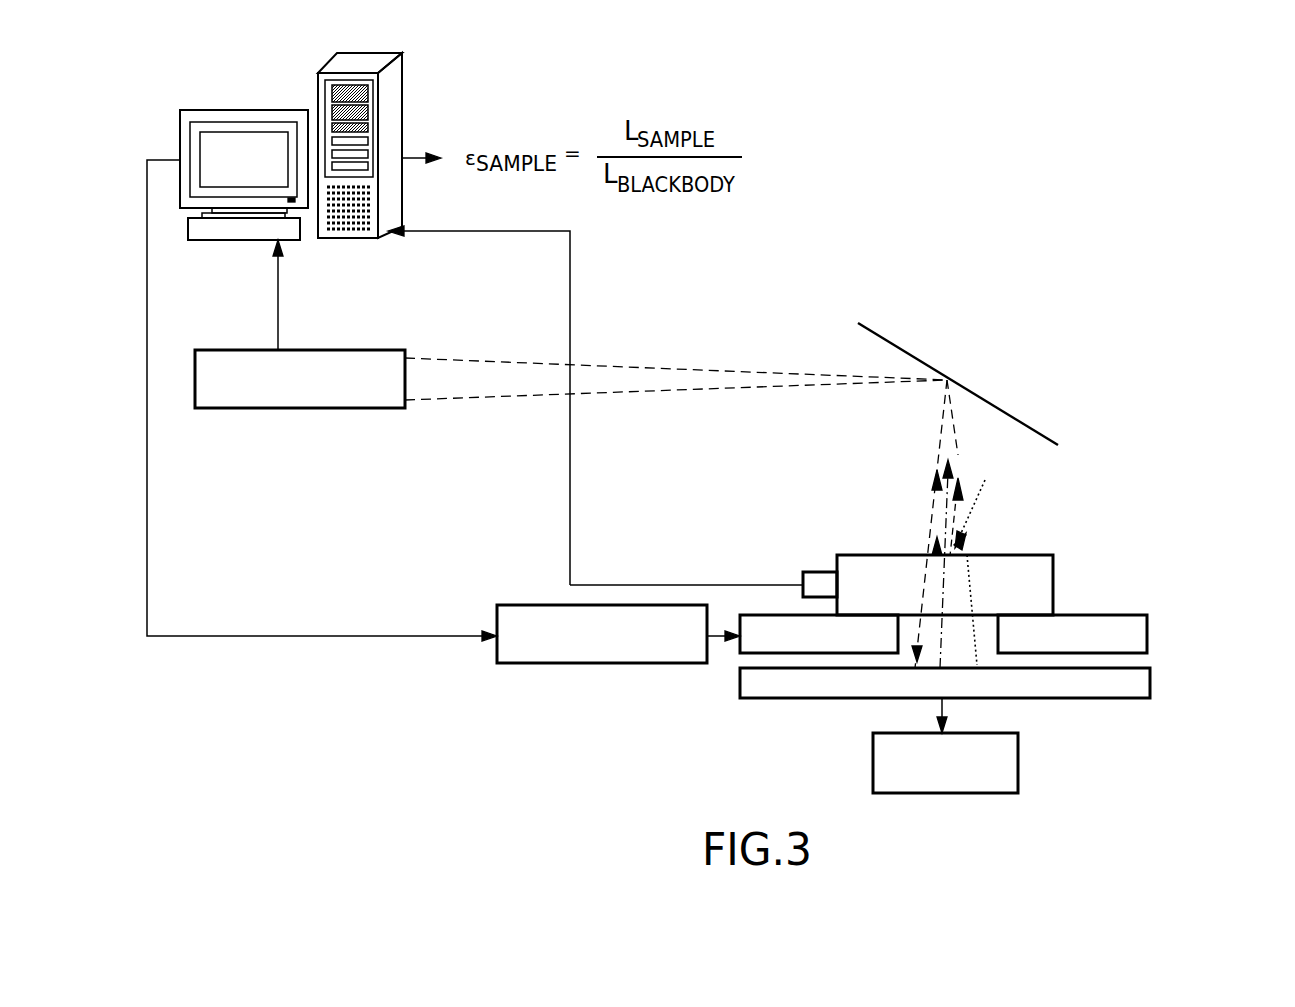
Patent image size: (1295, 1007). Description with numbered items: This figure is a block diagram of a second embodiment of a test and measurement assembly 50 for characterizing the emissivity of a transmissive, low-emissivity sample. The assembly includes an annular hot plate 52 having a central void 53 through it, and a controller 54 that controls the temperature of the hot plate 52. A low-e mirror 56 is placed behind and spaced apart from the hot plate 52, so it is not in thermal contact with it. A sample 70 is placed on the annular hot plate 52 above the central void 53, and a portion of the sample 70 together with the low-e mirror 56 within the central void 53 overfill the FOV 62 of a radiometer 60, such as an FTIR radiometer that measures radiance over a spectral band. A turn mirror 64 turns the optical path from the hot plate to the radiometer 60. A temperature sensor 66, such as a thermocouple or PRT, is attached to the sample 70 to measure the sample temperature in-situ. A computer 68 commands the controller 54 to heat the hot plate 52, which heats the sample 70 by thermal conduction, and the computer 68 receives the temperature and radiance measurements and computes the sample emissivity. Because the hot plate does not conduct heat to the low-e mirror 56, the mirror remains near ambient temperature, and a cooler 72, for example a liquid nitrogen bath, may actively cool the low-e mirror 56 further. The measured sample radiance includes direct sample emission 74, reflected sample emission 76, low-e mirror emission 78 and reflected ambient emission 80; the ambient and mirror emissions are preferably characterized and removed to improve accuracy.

The test and measurement assembly 50 is at (1120, 352).
The annular hot plate 52 is at (1148, 630).
The central void 53 is at (955, 635).
The controller 54 is at (545, 605).
The low-e mirror 56 is at (1151, 680).
The radiometer 60 is at (368, 350).
The FOV 62 is at (1002, 676).
The turn mirror 64 is at (901, 349).
The temperature sensor 66 is at (811, 571).
The computer 68 is at (250, 110).
The sample 70 is at (1028, 555).
The cooler 72 is at (1018, 777).
The direct sample emission 74 is at (890, 120).
The reflected sample emission 76 is at (890, 147).
The low-e mirror emission 78 is at (890, 174).
The reflected ambient emission 80 is at (890, 202).